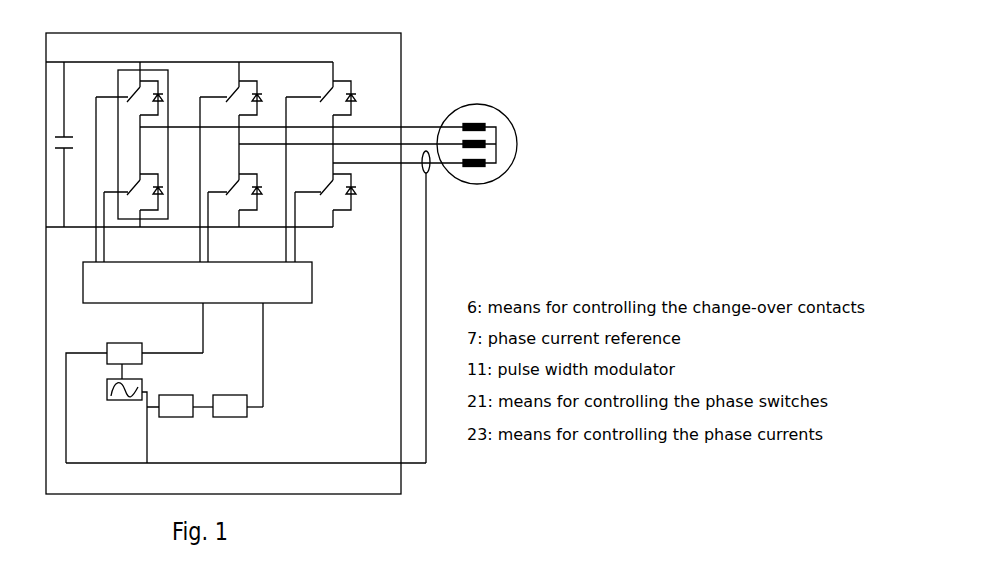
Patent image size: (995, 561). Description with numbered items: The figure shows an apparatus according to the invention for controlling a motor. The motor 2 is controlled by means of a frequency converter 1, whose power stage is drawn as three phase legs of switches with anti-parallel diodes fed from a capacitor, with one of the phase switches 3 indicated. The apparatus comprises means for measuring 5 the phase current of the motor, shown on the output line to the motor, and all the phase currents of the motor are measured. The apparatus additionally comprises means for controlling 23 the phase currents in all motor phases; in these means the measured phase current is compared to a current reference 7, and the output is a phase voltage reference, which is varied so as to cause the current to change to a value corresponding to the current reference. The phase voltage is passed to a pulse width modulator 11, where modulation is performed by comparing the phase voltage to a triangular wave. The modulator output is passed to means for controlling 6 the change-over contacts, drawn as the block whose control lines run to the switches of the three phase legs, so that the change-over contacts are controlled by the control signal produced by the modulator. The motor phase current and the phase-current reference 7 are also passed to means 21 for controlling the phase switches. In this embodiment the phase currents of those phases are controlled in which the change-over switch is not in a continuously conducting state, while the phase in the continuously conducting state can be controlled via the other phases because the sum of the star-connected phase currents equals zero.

The frequency converter 1 is at (333, 33).
The motor 2 is at (481, 103).
The phase switch (change-over contacts) 3 is at (168, 103).
The means for measuring the phase current 5 is at (430, 177).
The means for controlling the change-over contacts 6 is at (312, 292).
The current reference 7 is at (130, 400).
The pulse width modulator 11 is at (232, 417).
The means for controlling the phase switches 21 is at (142, 350).
The means for controlling the phase currents 23 is at (180, 392).